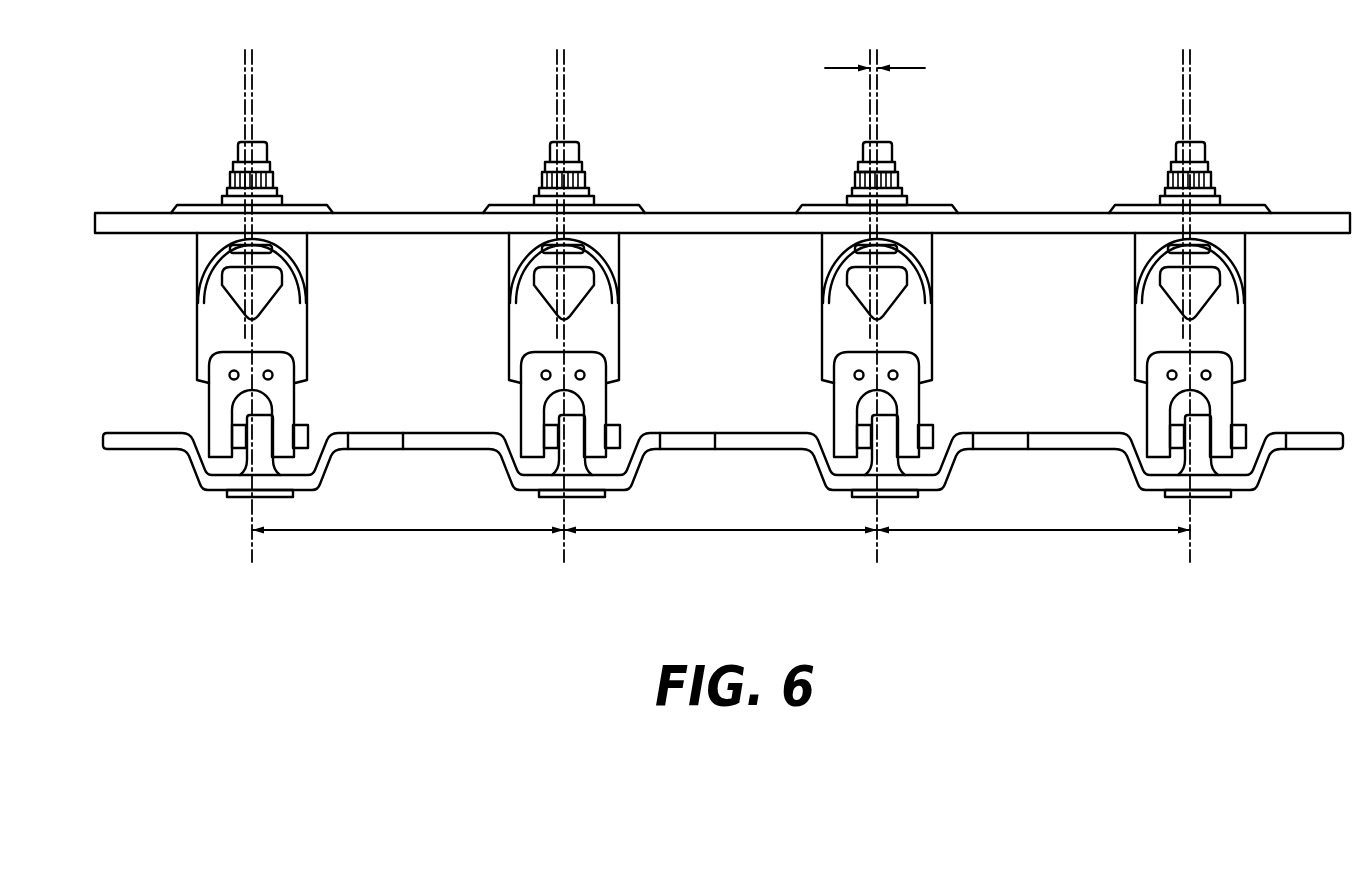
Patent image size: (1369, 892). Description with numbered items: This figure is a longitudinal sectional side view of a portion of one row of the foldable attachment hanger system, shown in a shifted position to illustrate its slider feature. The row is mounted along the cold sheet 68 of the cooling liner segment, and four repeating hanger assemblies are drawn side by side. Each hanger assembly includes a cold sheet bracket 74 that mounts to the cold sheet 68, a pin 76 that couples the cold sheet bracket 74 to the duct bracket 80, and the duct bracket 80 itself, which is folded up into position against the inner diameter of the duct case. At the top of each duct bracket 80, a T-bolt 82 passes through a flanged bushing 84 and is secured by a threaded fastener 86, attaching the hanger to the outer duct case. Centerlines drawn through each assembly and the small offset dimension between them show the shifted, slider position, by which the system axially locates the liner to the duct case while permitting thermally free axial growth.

The cold sheet 68 is at (708, 433).
The cold sheet bracket 74 is at (930, 433).
The pin 76 is at (995, 411).
The duct bracket 80 is at (916, 308).
The T-bolt 82 is at (912, 135).
The flanged bushing 84 is at (722, 192).
The threaded fastener 86 is at (914, 176).